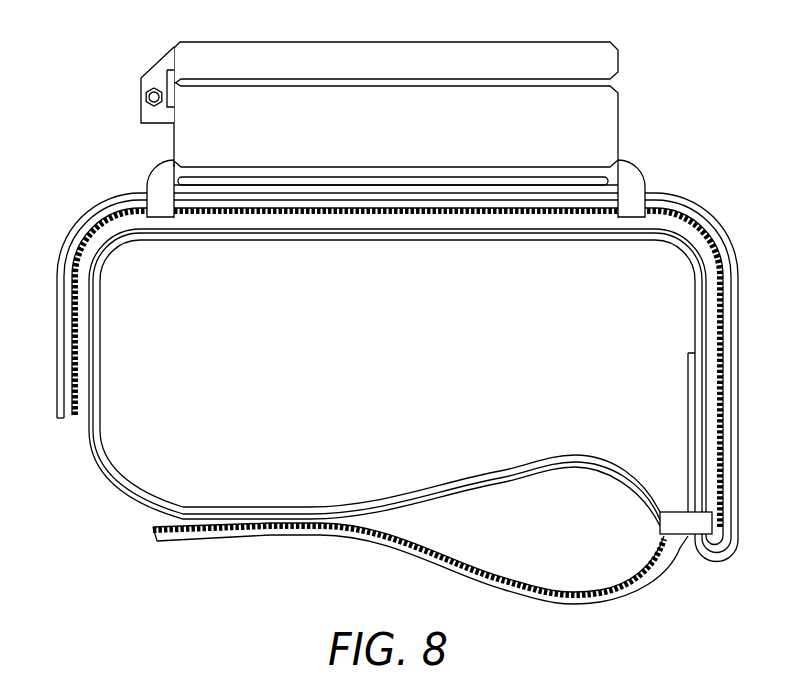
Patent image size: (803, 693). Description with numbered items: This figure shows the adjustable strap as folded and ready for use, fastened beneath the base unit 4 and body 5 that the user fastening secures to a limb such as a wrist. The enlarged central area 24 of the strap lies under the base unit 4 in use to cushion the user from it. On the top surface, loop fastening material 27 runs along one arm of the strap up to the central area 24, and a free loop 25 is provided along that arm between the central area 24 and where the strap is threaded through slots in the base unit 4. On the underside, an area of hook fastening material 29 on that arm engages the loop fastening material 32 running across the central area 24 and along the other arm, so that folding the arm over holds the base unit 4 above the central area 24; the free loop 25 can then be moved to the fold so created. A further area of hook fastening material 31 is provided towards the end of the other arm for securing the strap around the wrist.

The base unit 4 is at (610, 97).
The body 5 is at (634, 166).
The central area 24 is at (392, 232).
The free loop 25 is at (665, 527).
The loop fastening material 27 is at (97, 204).
The hook fastening material 29 is at (706, 280).
The hook fastening material 31 is at (493, 571).
The loop fastening material 32 is at (105, 471).